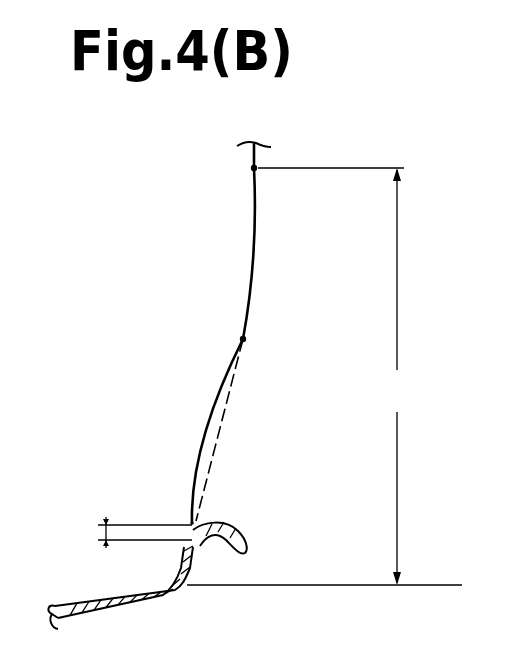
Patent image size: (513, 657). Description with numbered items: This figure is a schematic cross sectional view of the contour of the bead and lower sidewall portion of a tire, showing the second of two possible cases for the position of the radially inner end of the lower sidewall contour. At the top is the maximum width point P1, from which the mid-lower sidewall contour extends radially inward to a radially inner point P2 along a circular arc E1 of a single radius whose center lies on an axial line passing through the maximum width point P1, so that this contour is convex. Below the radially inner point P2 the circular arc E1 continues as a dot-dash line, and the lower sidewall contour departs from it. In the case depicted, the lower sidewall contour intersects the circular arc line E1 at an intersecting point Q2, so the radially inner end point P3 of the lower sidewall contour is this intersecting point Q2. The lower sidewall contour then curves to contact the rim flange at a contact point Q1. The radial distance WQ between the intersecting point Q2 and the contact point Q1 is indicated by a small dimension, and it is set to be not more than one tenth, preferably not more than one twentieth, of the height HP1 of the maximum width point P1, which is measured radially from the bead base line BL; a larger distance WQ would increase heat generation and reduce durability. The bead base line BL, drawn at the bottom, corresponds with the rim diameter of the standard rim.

The maximum width point P1 is at (258, 166).
The radially inner point P2 is at (246, 339).
The radially inner end of lower sidewall contour P3 is at (192, 525).
The intersecting point Q2 is at (192, 523).
The contact point Q1 is at (203, 545).
The circular arc E1 is at (226, 432).
The height of the maximum width point HP1 is at (339, 376).
The radial distance WQ is at (98, 532).
The bead base line BL is at (432, 588).